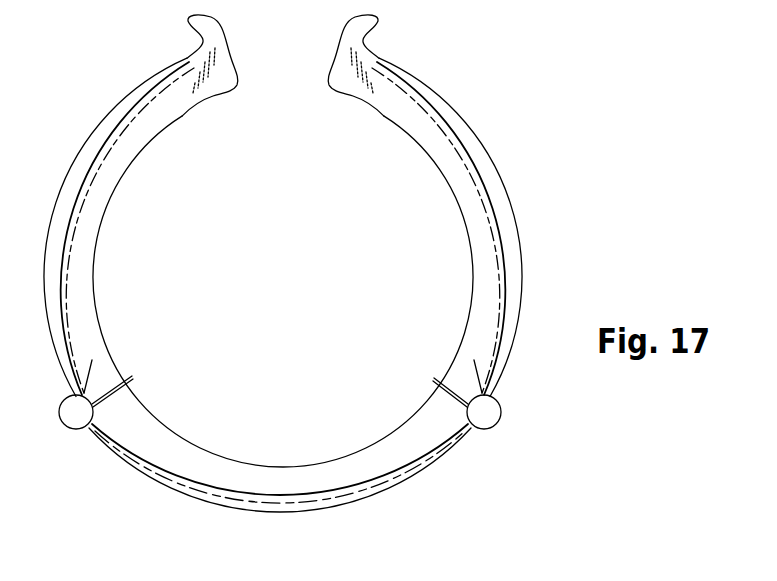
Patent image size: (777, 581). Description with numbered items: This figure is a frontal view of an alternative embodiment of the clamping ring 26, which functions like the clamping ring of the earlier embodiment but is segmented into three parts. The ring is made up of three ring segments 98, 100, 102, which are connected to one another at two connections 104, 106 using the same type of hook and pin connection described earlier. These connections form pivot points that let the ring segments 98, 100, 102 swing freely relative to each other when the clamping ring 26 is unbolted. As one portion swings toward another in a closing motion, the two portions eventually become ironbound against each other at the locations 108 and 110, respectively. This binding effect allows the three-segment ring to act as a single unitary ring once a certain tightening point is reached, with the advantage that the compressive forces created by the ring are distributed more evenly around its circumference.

The clamping ring 26 is at (501, 128).
The ring segment 98 is at (523, 258).
The ring segment 100 is at (235, 517).
The ring segment 102 is at (70, 152).
The hook and pin connection 104 is at (500, 418).
The hook and pin connection 106 is at (84, 428).
The ironbound location 108 is at (128, 381).
The ironbound location 110 is at (432, 381).